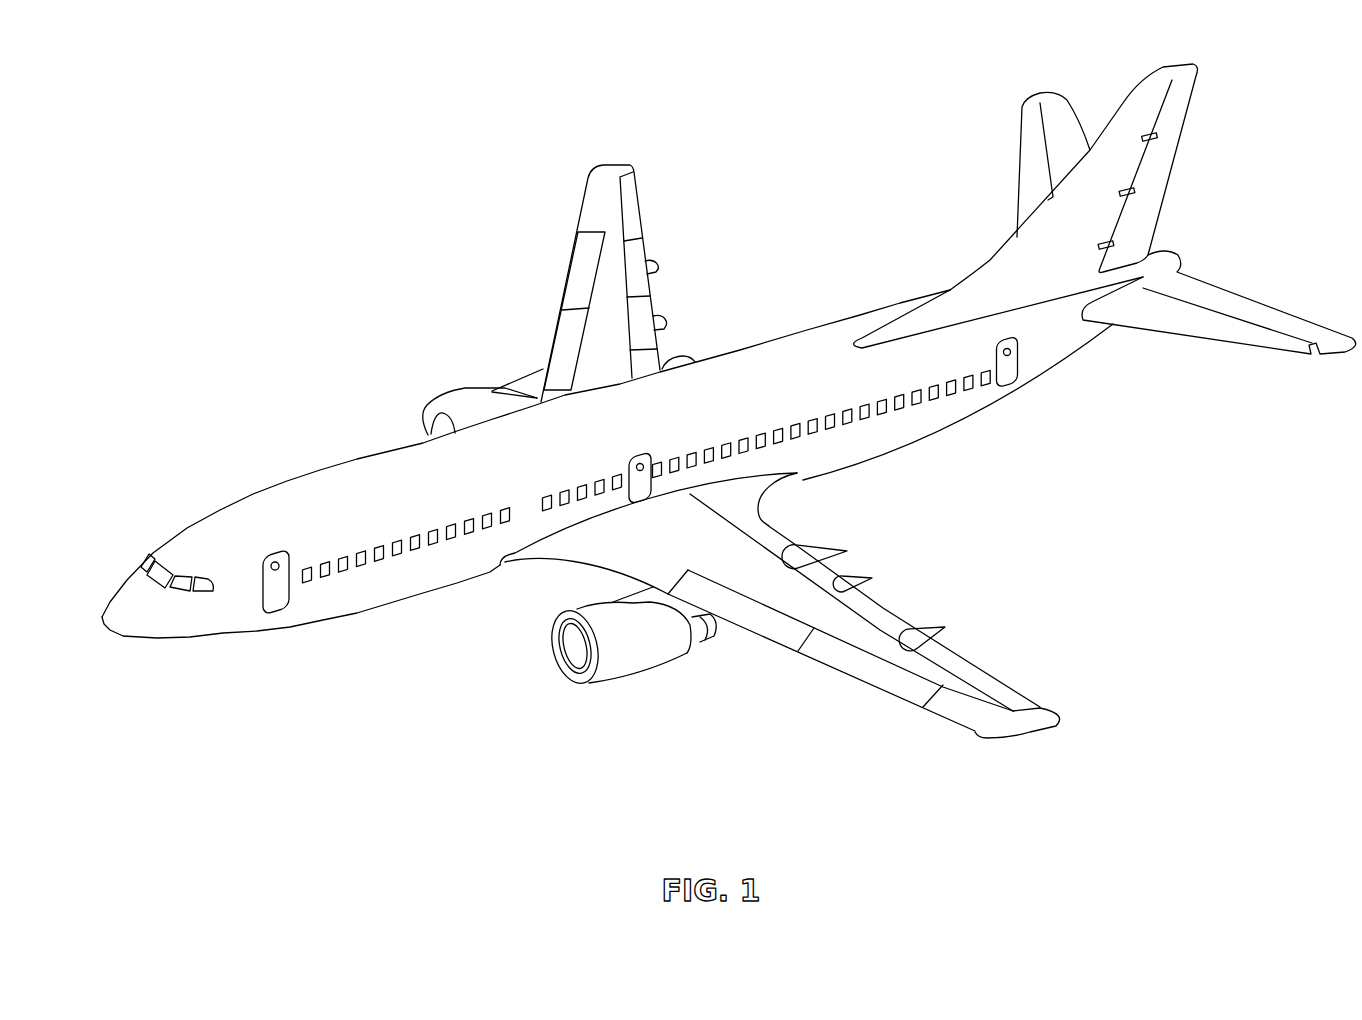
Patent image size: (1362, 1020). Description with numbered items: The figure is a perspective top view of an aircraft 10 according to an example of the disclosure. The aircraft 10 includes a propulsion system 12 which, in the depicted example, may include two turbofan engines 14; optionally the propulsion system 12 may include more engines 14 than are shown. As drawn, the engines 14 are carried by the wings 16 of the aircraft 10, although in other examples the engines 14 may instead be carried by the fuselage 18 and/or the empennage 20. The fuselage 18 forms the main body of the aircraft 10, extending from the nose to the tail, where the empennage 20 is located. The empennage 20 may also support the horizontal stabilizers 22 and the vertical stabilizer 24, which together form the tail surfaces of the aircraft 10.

The aircraft 10 is at (392, 137).
The propulsion system 12 is at (528, 739).
The turbofan engines 14 is at (637, 653).
The wings 16 is at (1007, 727).
The fuselage 18 is at (360, 588).
The empennage 20 is at (898, 283).
The horizontal stabilizers 22 is at (1053, 108).
The vertical stabilizer 24 is at (1153, 82).